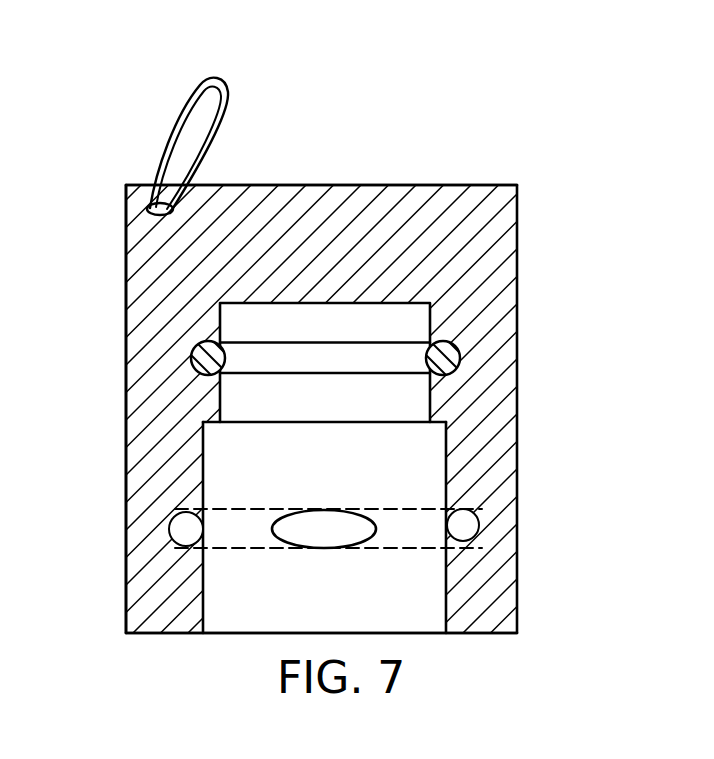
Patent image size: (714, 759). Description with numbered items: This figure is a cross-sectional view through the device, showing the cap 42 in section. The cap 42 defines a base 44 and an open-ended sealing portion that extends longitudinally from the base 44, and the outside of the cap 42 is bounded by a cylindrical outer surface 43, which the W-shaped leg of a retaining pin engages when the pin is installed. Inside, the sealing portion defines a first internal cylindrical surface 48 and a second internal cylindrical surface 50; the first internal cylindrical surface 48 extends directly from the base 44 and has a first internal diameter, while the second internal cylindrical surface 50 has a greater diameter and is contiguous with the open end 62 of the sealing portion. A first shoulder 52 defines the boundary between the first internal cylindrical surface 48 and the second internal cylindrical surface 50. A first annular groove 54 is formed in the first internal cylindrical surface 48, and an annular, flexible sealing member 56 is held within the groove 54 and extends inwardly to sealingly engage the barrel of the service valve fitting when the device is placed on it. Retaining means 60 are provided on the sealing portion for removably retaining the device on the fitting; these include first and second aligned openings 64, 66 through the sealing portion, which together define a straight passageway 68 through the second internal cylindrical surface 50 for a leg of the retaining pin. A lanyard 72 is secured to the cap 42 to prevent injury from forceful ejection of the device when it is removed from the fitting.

The cap 42 is at (517, 245).
The cylindrical outer surface 43 is at (126, 403).
The base 44 is at (238, 193).
The first internal cylindrical surface 48 is at (253, 300).
The second internal cylindrical surface 50 is at (465, 546).
The first shoulder 52 is at (436, 424).
The first annular groove 54 is at (327, 345).
The annular flexible sealing member 56 is at (385, 367).
The retaining means 60 is at (190, 546).
The open end 62 is at (446, 610).
The first aligned opening 64 is at (483, 522).
The second aligned opening 66 is at (168, 545).
The straight passageway 68 is at (318, 532).
The lanyard 72 is at (228, 99).